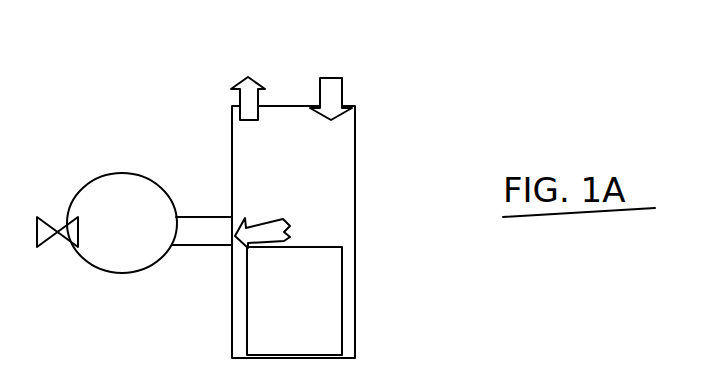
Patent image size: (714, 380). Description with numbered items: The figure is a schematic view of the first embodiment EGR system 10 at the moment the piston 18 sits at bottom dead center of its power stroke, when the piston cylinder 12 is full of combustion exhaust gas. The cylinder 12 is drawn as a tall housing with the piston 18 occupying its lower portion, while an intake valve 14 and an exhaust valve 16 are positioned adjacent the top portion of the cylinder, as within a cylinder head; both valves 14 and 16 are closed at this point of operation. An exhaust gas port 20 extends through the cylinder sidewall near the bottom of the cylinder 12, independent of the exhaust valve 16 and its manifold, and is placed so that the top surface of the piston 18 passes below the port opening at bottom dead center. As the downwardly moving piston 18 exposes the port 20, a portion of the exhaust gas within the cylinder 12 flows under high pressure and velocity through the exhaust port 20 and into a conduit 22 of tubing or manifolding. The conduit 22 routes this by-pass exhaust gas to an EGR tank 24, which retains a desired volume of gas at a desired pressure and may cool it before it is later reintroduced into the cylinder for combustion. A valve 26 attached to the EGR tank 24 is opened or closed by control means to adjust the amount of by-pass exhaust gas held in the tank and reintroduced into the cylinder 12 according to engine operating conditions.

The EGR system 10 is at (388, 112).
The piston cylinder 12 is at (355, 170).
The intake valve 14 is at (332, 87).
The exhaust valve 16 is at (262, 97).
The piston 18 is at (312, 289).
The exhaust gas port 20 is at (239, 230).
The conduit 22 is at (197, 225).
The EGR tank 24 is at (130, 158).
The valve 26 is at (53, 220).